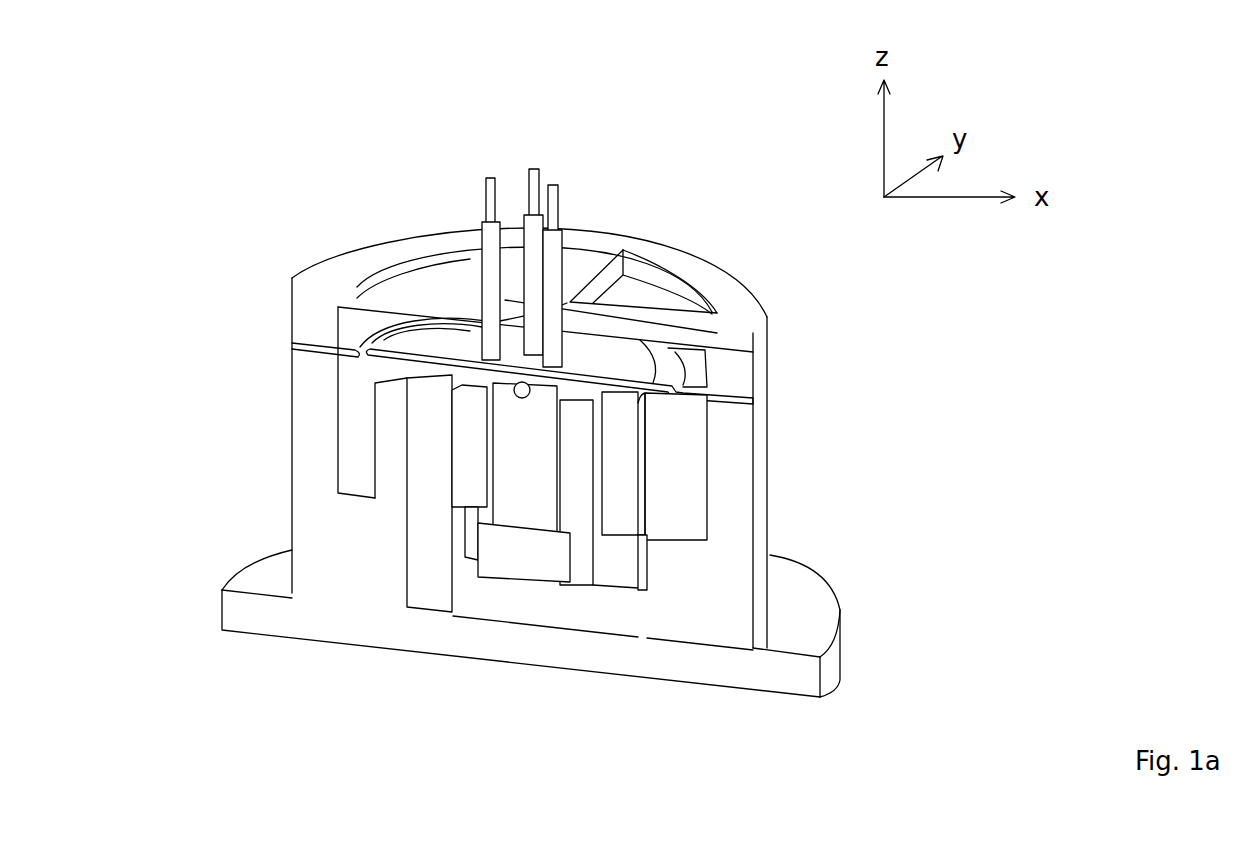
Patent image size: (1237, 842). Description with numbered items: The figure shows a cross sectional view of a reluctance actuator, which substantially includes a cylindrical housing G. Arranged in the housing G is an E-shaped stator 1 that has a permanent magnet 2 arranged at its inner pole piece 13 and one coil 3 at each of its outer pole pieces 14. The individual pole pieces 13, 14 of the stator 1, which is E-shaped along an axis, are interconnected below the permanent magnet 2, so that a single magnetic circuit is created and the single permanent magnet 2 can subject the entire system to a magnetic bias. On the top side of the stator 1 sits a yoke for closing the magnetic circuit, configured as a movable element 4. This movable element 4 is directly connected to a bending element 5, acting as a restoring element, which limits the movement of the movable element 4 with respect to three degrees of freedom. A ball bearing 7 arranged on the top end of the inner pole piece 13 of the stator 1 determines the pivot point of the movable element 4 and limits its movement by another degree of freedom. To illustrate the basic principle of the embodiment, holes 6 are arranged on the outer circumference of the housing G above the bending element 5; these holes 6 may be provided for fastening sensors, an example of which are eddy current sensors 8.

The stator 1 is at (612, 481).
The permanent magnet 2 is at (513, 548).
The coil 3 is at (395, 473).
The movable element 4 is at (417, 368).
The bending element 5 is at (442, 350).
The holes 6 is at (393, 245).
The ball bearing 7 is at (530, 385).
The eddy current sensors 8 is at (555, 212).
The inner pole piece 13 is at (541, 490).
The outer pole pieces 14 is at (610, 497).
The housing G is at (808, 616).